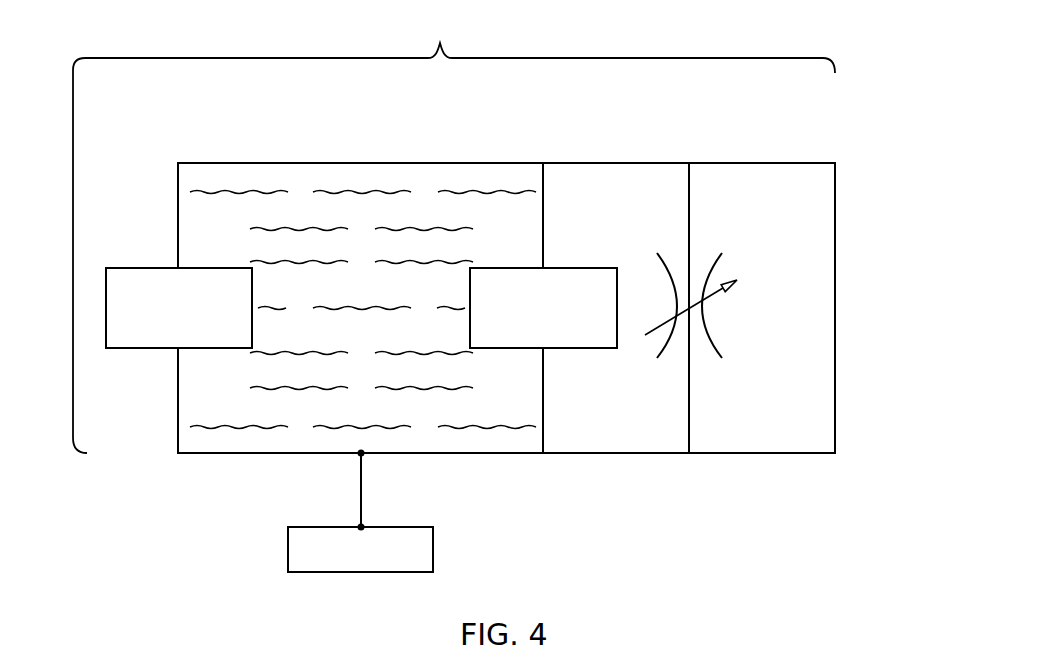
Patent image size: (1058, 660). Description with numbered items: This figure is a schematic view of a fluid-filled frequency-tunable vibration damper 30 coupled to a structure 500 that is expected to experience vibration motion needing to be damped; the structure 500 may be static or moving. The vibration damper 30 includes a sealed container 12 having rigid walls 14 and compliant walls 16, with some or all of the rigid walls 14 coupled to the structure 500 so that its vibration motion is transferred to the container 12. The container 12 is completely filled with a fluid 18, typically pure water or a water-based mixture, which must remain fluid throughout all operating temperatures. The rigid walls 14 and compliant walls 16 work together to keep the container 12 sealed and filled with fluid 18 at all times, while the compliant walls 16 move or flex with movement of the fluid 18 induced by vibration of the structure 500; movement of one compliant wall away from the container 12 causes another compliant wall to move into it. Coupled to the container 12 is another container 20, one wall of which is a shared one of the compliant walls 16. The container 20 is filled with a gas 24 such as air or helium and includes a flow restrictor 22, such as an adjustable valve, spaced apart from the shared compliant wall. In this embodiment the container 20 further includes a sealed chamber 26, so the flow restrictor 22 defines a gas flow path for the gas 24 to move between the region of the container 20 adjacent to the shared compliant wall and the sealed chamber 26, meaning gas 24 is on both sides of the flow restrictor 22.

The vibration damper 30 is at (454, 235).
The sealed container 12 is at (290, 147).
The rigid walls 14 is at (425, 163).
The compliant walls 16 is at (120, 268).
The fluid 18 is at (273, 228).
The container 20 is at (620, 163).
The flow restrictor 22 is at (712, 330).
The gas 24 is at (652, 432).
The sealed chamber 26 is at (760, 163).
The structure 500 is at (433, 552).